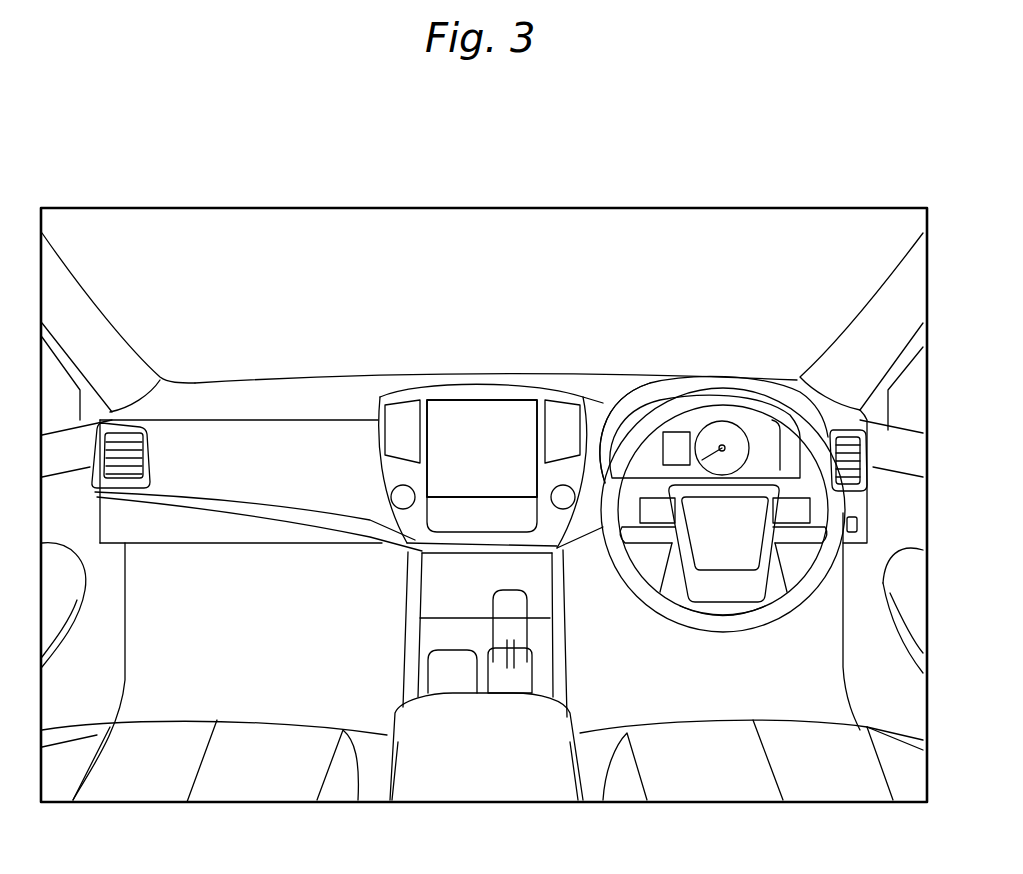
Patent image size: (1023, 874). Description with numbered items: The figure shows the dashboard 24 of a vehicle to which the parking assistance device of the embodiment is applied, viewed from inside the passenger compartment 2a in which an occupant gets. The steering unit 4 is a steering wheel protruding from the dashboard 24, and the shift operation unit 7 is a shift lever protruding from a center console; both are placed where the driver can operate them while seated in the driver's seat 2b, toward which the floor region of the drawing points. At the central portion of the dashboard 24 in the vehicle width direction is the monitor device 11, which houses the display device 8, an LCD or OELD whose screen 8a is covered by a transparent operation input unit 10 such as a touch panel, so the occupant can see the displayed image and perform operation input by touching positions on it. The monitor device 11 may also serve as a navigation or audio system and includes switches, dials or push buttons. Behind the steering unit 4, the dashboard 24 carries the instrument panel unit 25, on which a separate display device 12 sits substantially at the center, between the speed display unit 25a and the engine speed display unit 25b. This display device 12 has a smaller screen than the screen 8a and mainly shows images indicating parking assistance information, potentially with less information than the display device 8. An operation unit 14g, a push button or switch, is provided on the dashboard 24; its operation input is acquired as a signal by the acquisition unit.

The passenger compartment 2a is at (268, 229).
The driver's seat 2b is at (706, 791).
The steering unit 4 is at (758, 397).
The shift operation unit 7 is at (508, 694).
The display device 8 is at (482, 448).
The screen 8a is at (510, 420).
The operation input unit 10 is at (482, 448).
The monitor device 11 is at (472, 387).
The display device 12 is at (677, 452).
The operation unit 14g is at (858, 523).
The dashboard 24 is at (365, 380).
The instrument panel unit 25 is at (693, 420).
The speed display unit 25a is at (614, 433).
The engine speed display unit 25b is at (722, 440).